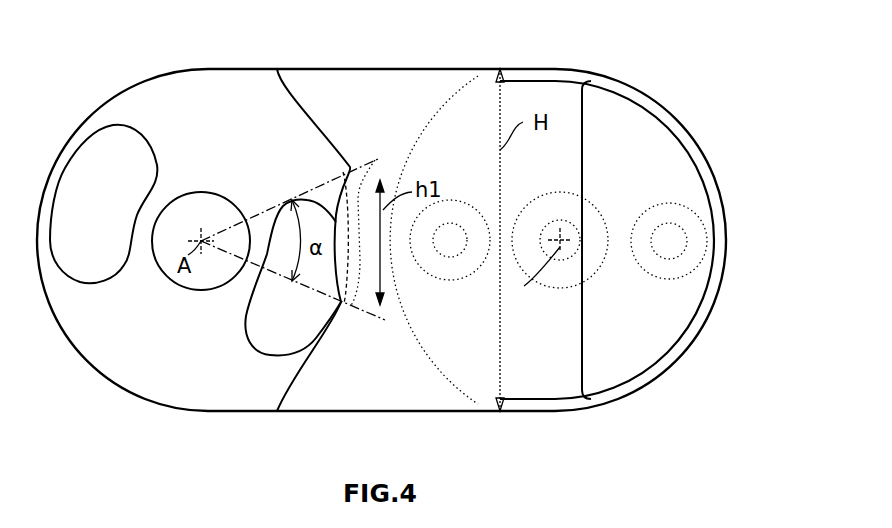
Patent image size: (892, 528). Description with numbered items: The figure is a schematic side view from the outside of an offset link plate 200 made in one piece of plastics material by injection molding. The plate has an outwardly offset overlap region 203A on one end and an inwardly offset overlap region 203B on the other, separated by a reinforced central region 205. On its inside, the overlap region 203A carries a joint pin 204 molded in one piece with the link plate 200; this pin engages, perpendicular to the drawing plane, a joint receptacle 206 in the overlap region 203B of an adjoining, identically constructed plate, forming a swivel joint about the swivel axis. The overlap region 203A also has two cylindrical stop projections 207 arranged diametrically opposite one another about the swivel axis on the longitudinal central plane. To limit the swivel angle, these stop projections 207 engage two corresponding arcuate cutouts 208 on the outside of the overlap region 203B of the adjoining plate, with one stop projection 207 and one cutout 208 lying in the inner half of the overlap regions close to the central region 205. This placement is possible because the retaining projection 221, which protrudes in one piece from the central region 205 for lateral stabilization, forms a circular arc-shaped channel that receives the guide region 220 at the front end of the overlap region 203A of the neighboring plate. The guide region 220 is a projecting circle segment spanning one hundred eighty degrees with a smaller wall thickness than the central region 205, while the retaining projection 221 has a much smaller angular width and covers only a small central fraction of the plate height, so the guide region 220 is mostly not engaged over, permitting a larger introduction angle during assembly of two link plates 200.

The offset link plate 200 is at (402, 210).
The outwardly offset overlap region 203A is at (643, 122).
The inwardly offset overlap region 203B is at (147, 100).
The joint pin 204 is at (573, 277).
The reinforced central region 205 is at (389, 381).
The joint receptacle 206 is at (201, 191).
The stop projections 207 is at (457, 273).
The arcuate cutouts 208 is at (111, 217).
The guide region 220 is at (703, 180).
The retaining projection 221 is at (358, 178).